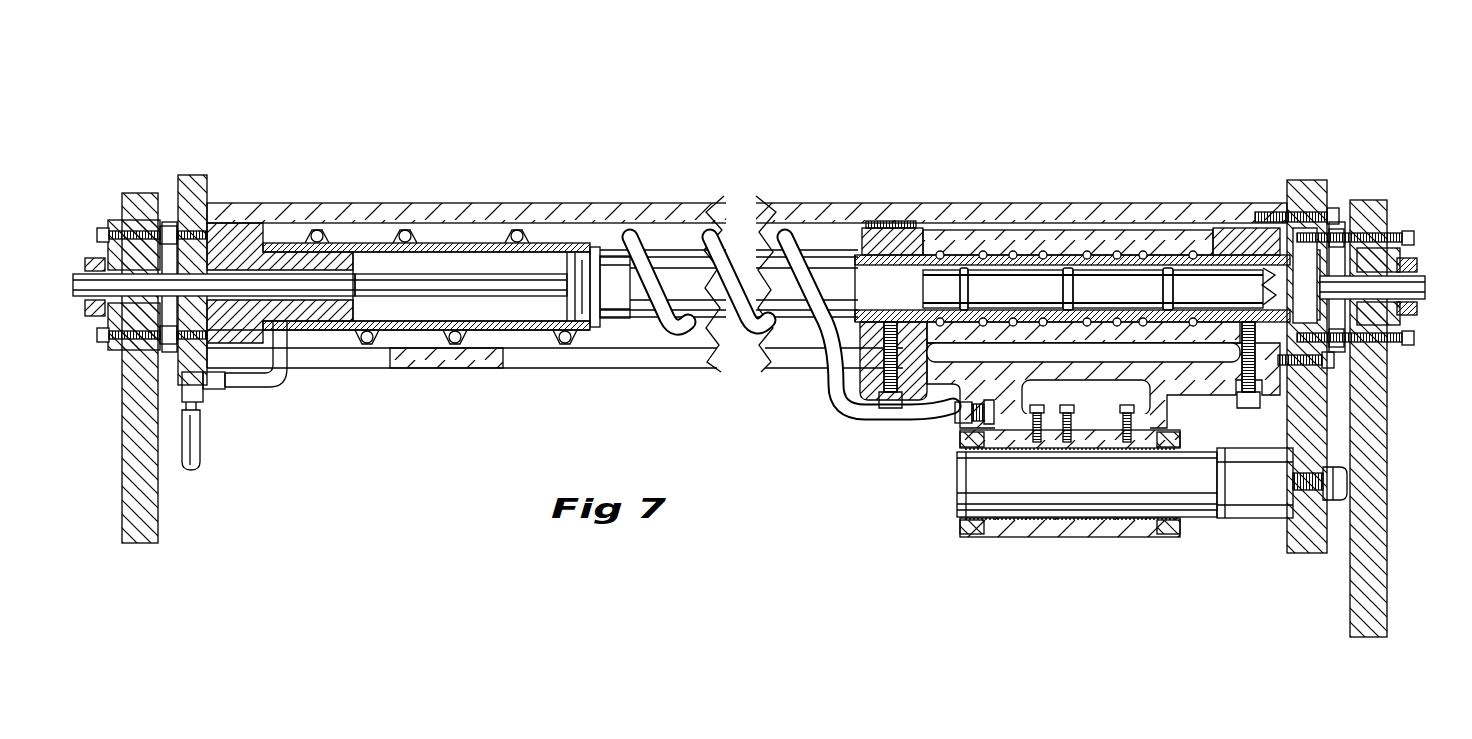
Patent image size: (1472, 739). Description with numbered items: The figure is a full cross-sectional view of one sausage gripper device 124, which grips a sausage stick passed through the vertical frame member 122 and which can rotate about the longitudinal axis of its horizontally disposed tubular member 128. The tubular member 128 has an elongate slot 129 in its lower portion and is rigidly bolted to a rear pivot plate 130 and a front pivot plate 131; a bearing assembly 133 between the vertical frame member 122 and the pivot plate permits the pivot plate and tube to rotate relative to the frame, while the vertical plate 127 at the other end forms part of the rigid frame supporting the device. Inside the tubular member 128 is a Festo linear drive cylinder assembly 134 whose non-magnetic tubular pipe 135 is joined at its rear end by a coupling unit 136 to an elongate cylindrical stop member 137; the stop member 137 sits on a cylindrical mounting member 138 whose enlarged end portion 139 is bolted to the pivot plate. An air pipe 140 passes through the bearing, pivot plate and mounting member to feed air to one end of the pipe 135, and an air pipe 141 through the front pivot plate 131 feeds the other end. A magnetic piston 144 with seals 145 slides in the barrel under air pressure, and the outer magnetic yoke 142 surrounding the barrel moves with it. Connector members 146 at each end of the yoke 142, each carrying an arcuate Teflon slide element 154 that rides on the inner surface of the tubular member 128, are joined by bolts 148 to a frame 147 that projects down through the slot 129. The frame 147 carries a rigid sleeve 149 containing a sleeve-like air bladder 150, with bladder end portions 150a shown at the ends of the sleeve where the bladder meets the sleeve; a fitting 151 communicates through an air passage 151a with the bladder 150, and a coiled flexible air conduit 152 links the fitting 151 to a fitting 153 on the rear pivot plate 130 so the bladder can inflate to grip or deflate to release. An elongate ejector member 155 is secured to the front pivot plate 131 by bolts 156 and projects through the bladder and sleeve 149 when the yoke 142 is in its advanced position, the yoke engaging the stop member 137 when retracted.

The vertical frame member 122 is at (160, 528).
The sausage gripper device 124 is at (876, 96).
The vertical plate 127 is at (1350, 620).
The tubular member 128 is at (740, 265).
The slot 129 is at (537, 358).
The rear pivot plate 130 is at (210, 170).
The front pivot plate 131 is at (1310, 174).
The bearing assembly 133 is at (98, 330).
The Festo linear drive cylinder assembly 134 is at (856, 234).
The tubular pipe 135 is at (724, 323).
The coupling unit 136 is at (618, 305).
The stop member 137 is at (560, 240).
The cylindrical mounting member 138 is at (352, 265).
The enlarged end portion 139 is at (270, 228).
The air pipe 140 is at (77, 275).
The air pipe 141 is at (1418, 282).
The outer magnetic yoke 142 is at (1034, 228).
The magnetic piston 144 is at (925, 289).
The seals 145 is at (962, 270).
The connector member 146 is at (862, 232).
The frame 147 is at (1160, 412).
The bolts 148 is at (1247, 408).
The rigid sleeve 149 is at (1115, 538).
The air bladder 150 is at (1020, 522).
The seals 150a is at (968, 523).
The fitting 151 is at (953, 420).
The air passage 151a is at (995, 422).
The flexible air conduit 152 is at (268, 388).
The fitting 153 is at (203, 390).
The slide element 154 is at (890, 226).
The ejector member 155 is at (962, 490).
The bolts 156 is at (1340, 490).